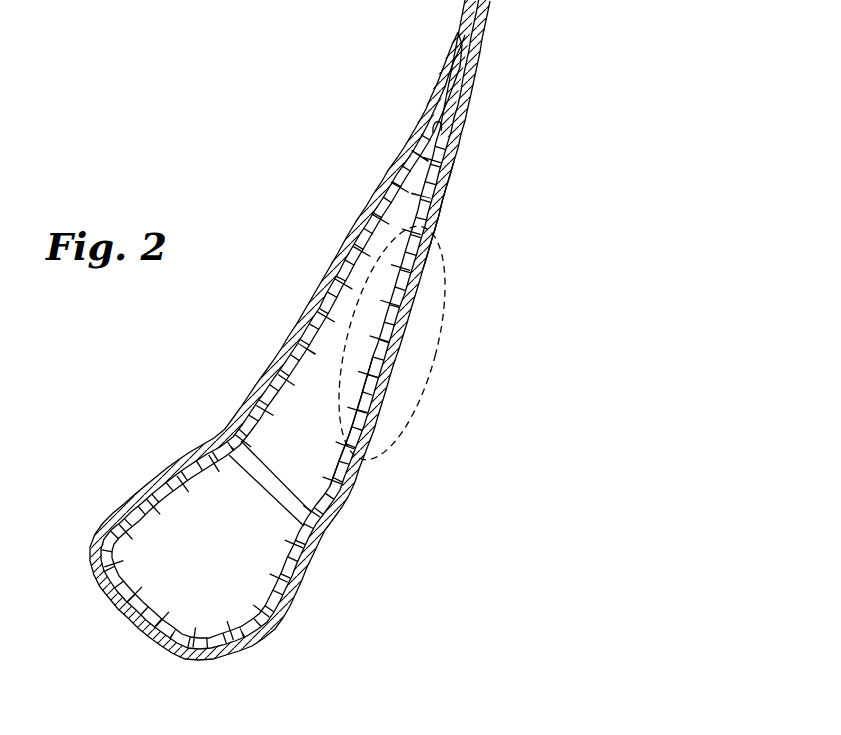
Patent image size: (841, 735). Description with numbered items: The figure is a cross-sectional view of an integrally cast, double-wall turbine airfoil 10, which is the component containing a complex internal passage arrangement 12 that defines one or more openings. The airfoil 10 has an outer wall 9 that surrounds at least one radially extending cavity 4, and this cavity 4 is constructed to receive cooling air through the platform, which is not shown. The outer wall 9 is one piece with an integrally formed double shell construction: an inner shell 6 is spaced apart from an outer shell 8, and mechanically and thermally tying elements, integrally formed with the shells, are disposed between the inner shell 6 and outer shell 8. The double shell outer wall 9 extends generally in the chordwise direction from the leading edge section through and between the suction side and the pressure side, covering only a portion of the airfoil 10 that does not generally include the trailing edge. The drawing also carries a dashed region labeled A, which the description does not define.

The radially extending cavity 4 is at (292, 449).
The inner shell 6 is at (293, 355).
The outer shell 8 is at (281, 356).
The outer wall 9 is at (289, 293).
The turbine airfoil 10 is at (428, 527).
The complex internal passage arrangement 12 is at (441, 204).
The region A is at (432, 358).